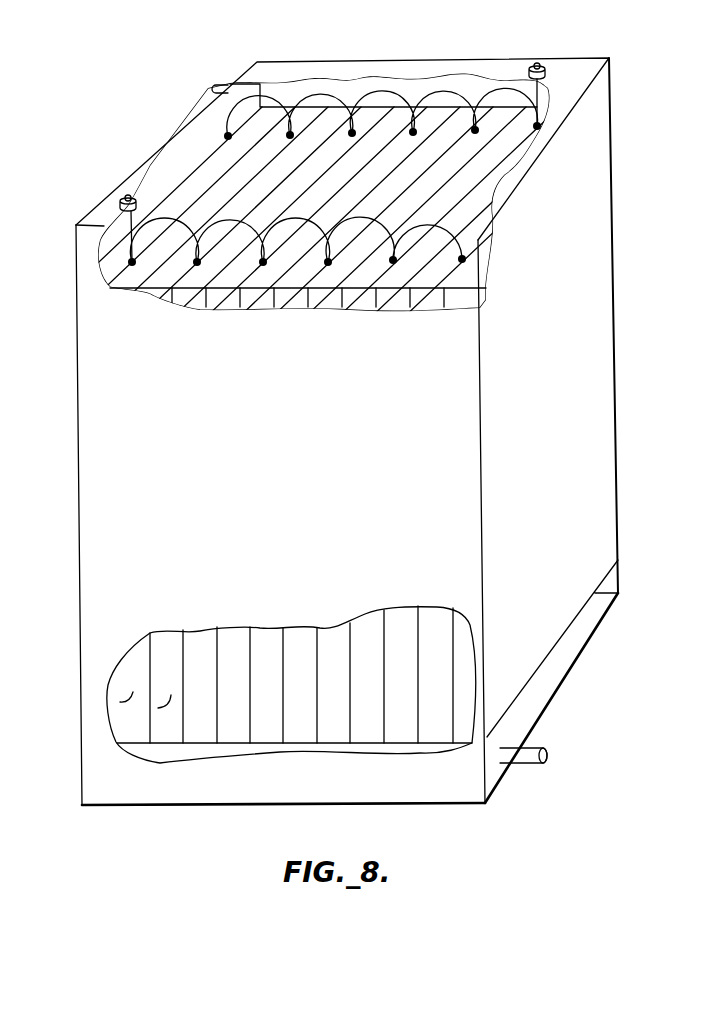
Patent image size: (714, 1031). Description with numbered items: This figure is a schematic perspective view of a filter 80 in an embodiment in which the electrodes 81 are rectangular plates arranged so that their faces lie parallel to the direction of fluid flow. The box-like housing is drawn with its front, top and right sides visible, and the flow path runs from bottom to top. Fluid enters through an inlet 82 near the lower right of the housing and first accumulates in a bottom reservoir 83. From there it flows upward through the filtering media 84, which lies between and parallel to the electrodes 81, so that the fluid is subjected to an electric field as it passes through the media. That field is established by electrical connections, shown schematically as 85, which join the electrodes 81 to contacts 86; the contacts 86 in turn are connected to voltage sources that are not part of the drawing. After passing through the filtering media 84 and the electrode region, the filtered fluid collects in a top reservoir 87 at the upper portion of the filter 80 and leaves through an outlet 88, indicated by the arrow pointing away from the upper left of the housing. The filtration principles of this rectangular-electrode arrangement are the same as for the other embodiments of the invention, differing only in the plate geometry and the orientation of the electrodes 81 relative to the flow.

The filter 80 is at (393, 32).
The electrodes 81 is at (116, 684).
The inlet 82 is at (592, 753).
The bottom reservoir 83 is at (304, 794).
The filtering media 84 is at (158, 708).
The electrical connections 85 is at (228, 220).
The contacts 86 is at (121, 201).
The top reservoir 87 is at (559, 192).
The outlet 88 is at (213, 92).